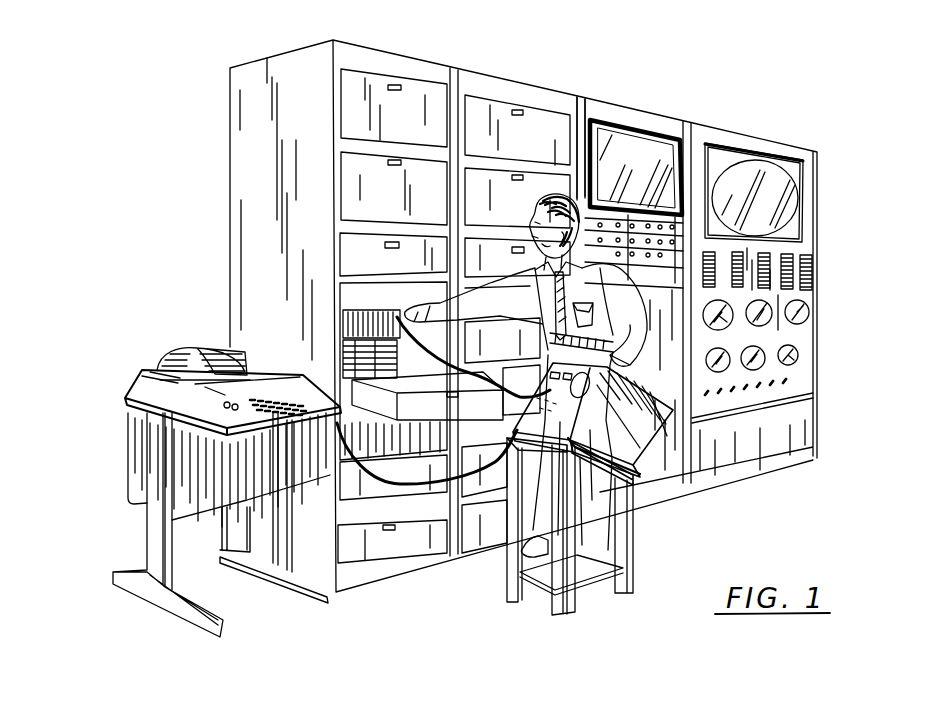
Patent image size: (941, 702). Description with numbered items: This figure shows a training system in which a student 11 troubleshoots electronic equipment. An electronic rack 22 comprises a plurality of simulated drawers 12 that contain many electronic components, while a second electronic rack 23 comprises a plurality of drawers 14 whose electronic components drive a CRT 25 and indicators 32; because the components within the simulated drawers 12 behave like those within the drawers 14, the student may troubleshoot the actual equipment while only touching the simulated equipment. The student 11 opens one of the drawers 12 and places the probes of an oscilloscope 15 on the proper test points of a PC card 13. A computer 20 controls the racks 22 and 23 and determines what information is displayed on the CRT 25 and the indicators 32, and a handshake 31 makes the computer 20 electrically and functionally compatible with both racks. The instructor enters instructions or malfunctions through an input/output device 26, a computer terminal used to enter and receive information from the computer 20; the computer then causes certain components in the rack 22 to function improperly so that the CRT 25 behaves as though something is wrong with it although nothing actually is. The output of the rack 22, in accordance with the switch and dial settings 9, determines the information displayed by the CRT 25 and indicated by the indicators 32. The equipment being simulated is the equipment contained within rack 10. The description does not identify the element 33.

The rack 10 is at (787, 152).
The student 11 is at (632, 322).
The simulated drawers 12 is at (357, 163).
The PC card 13 is at (345, 335).
The drawers 14 is at (553, 127).
The oscilloscope 15 is at (632, 435).
The computer 20 is at (643, 120).
The electronic rack 22 is at (245, 72).
The electronic rack 23 is at (498, 85).
The CRT 25 is at (788, 202).
The input/output device 26 is at (127, 387).
The handshake 31 is at (643, 493).
The indicators 32 is at (808, 310).
The monitor controls 33 is at (637, 242).
The switches and dials 9 is at (792, 378).